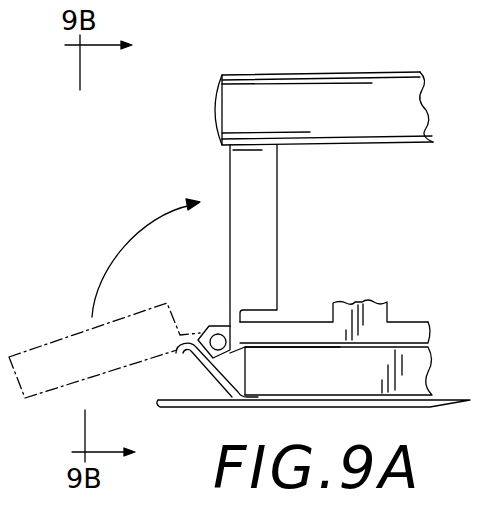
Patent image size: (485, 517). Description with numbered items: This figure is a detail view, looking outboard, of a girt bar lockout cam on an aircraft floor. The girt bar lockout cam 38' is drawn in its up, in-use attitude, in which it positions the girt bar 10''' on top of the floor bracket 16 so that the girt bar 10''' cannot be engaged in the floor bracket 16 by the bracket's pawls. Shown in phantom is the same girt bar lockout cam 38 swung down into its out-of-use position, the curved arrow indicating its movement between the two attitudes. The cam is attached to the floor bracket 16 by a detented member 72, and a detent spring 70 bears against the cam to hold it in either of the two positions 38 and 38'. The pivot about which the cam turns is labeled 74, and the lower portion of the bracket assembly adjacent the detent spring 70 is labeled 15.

The girt bar 10''' is at (324, 84).
The girt bar lockout cam (in-use position) 38' is at (288, 235).
The girt bar lockout cam (out-of-use position) 38 is at (104, 298).
The pivot 74 is at (223, 333).
The detent spring 70 is at (212, 380).
The detented member 72 is at (232, 357).
The floor bracket 16 is at (428, 322).
The base support 15 is at (433, 378).